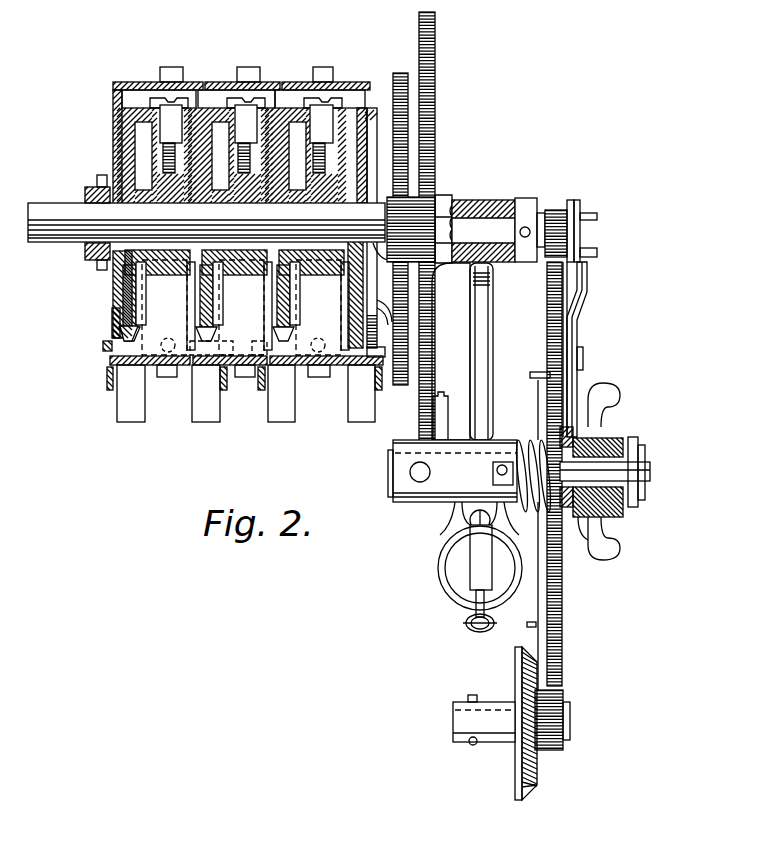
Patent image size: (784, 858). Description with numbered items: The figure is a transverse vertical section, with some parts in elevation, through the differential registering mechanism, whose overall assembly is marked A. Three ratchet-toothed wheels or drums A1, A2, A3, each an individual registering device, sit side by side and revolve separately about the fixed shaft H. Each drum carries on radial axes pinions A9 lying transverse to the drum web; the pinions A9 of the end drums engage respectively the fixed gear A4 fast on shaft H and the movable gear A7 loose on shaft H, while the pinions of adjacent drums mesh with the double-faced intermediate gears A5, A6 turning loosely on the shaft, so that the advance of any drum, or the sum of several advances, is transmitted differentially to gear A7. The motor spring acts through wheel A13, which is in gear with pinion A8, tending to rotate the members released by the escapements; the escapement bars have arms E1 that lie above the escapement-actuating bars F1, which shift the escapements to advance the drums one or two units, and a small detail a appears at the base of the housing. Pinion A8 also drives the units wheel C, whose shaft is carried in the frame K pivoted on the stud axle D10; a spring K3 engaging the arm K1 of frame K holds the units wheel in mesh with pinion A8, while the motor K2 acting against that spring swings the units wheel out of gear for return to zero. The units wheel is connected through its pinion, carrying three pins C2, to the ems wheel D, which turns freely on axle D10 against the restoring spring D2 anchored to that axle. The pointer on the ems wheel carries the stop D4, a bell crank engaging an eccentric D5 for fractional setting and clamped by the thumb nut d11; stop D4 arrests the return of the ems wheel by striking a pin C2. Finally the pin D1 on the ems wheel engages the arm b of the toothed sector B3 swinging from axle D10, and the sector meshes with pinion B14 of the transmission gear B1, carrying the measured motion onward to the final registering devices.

The frame A is at (261, 375).
The ratchet-toothed wheel A1 is at (167, 377).
The ratchet-toothed wheel A2 is at (266, 396).
The ratchet-toothed wheel A3 is at (322, 373).
The fixed gear A4 is at (118, 165).
The double-faced gear A5 is at (218, 90).
The double-faced gear A6 is at (280, 116).
The movable gear A7 is at (400, 74).
The pinion A8 is at (438, 200).
The pinion A9 is at (152, 92).
The wheel A13 is at (436, 70).
The frame opening a is at (151, 360).
The transmission gear B1 is at (521, 750).
The toothed sector B3 is at (561, 686).
The pinion B14 is at (567, 706).
The arm b is at (540, 650).
The units wheel C is at (440, 96).
The pin C2 is at (598, 214).
The ems wheel D is at (562, 606).
The pin D1 is at (549, 316).
The restoring spring D2 is at (538, 425).
The stop D4 is at (592, 276).
The eccentric D5 is at (600, 524).
The stud axle D10 is at (652, 472).
The thumb nut d11 is at (606, 436).
The arm E1 is at (193, 412).
The bearing block F1 is at (112, 386).
The fixed shaft H is at (62, 246).
The frame K is at (478, 205).
The arm K1 is at (476, 553).
The motor K2 is at (441, 577).
The spring K3 is at (468, 631).